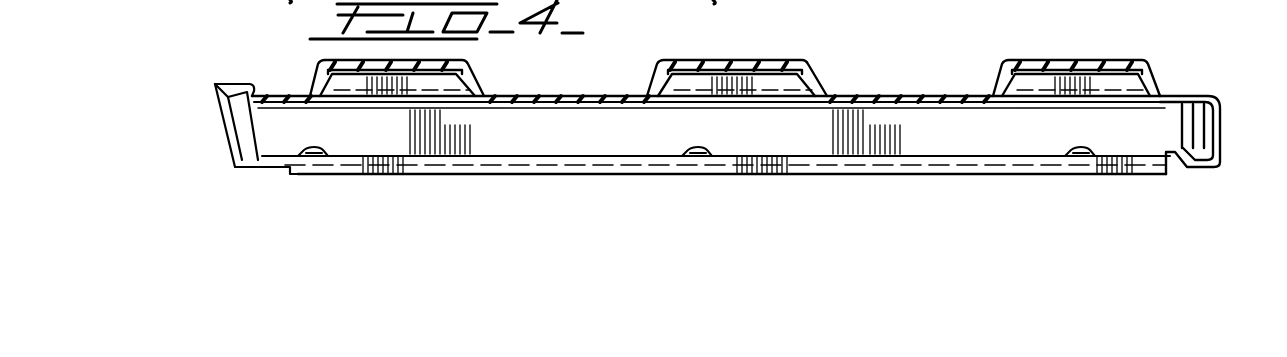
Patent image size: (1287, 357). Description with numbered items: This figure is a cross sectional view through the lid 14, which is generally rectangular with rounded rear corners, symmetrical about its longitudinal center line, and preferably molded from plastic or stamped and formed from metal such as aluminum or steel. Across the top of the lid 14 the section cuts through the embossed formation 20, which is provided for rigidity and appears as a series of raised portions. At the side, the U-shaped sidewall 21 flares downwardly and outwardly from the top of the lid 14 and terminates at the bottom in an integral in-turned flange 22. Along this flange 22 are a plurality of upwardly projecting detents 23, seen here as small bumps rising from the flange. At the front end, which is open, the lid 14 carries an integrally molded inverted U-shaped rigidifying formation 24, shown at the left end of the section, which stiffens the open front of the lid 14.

The lid 14 is at (913, 97).
The embossed formation 20 is at (575, 96).
The U-shaped sidewall 21 is at (1222, 122).
The in-turned flange 22 is at (603, 156).
The detents 23 is at (308, 149).
The inverted U-shaped rigidifying formation 24 is at (225, 84).